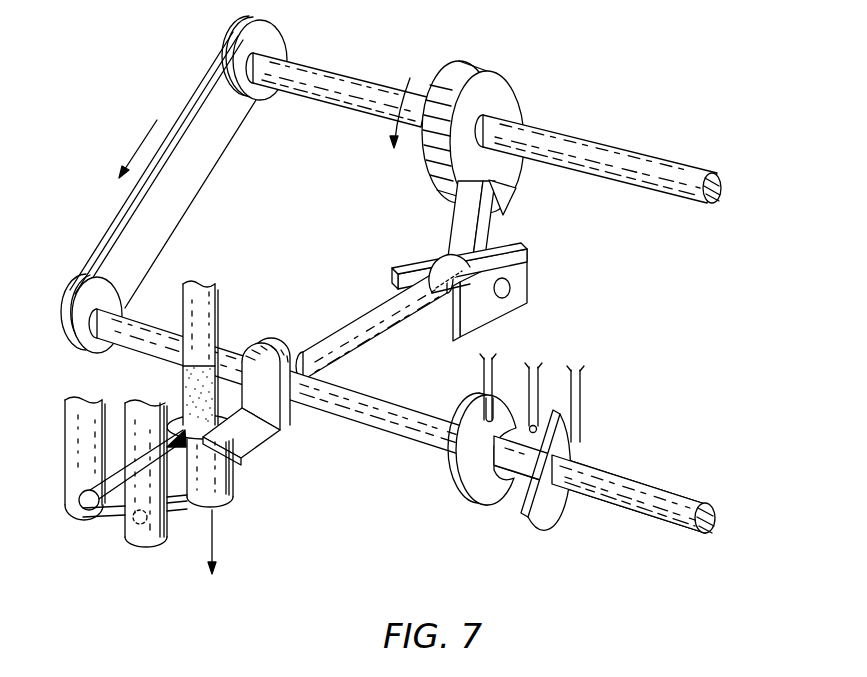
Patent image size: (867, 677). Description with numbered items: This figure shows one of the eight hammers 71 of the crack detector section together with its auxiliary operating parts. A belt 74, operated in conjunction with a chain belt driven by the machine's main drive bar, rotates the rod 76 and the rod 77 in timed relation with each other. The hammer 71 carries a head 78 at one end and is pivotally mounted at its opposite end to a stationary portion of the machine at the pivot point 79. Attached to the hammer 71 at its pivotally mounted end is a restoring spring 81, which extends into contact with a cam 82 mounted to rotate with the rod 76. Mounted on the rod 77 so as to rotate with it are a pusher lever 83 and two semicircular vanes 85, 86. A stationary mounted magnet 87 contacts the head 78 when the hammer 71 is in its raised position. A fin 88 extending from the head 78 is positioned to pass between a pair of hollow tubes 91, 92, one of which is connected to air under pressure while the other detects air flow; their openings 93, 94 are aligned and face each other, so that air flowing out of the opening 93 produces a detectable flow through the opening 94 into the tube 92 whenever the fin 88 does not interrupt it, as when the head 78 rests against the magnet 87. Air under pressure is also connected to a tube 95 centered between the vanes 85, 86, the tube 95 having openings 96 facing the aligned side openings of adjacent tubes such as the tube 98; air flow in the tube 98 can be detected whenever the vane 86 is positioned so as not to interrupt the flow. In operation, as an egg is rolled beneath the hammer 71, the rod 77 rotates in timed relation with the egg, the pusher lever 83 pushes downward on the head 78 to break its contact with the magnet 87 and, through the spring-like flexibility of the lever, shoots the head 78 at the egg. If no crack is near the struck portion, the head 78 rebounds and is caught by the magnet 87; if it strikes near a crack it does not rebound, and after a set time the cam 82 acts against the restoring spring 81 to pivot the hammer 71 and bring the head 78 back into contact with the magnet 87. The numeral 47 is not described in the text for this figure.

The belt 74 is at (193, 103).
The rod 76 is at (355, 88).
The cam 82 is at (517, 92).
The restoring spring 81 is at (475, 240).
The pivot point 79 is at (507, 288).
The hammer 71 is at (368, 322).
The rod 77 is at (150, 322).
The magnet 87 is at (185, 384).
The pusher lever 83 is at (267, 445).
The head 78 is at (234, 492).
The fin 88 is at (173, 492).
The hollow tube 91 is at (82, 445).
The hollow tube 92 is at (125, 545).
The opening 93 is at (75, 520).
The opening 94 is at (142, 540).
The semicircular vane 85 is at (470, 480).
The semicircular vane 86 is at (549, 512).
The pin 47 is at (484, 378).
The tube 95 is at (539, 380).
The openings 96 is at (540, 428).
The tube 98 is at (578, 386).